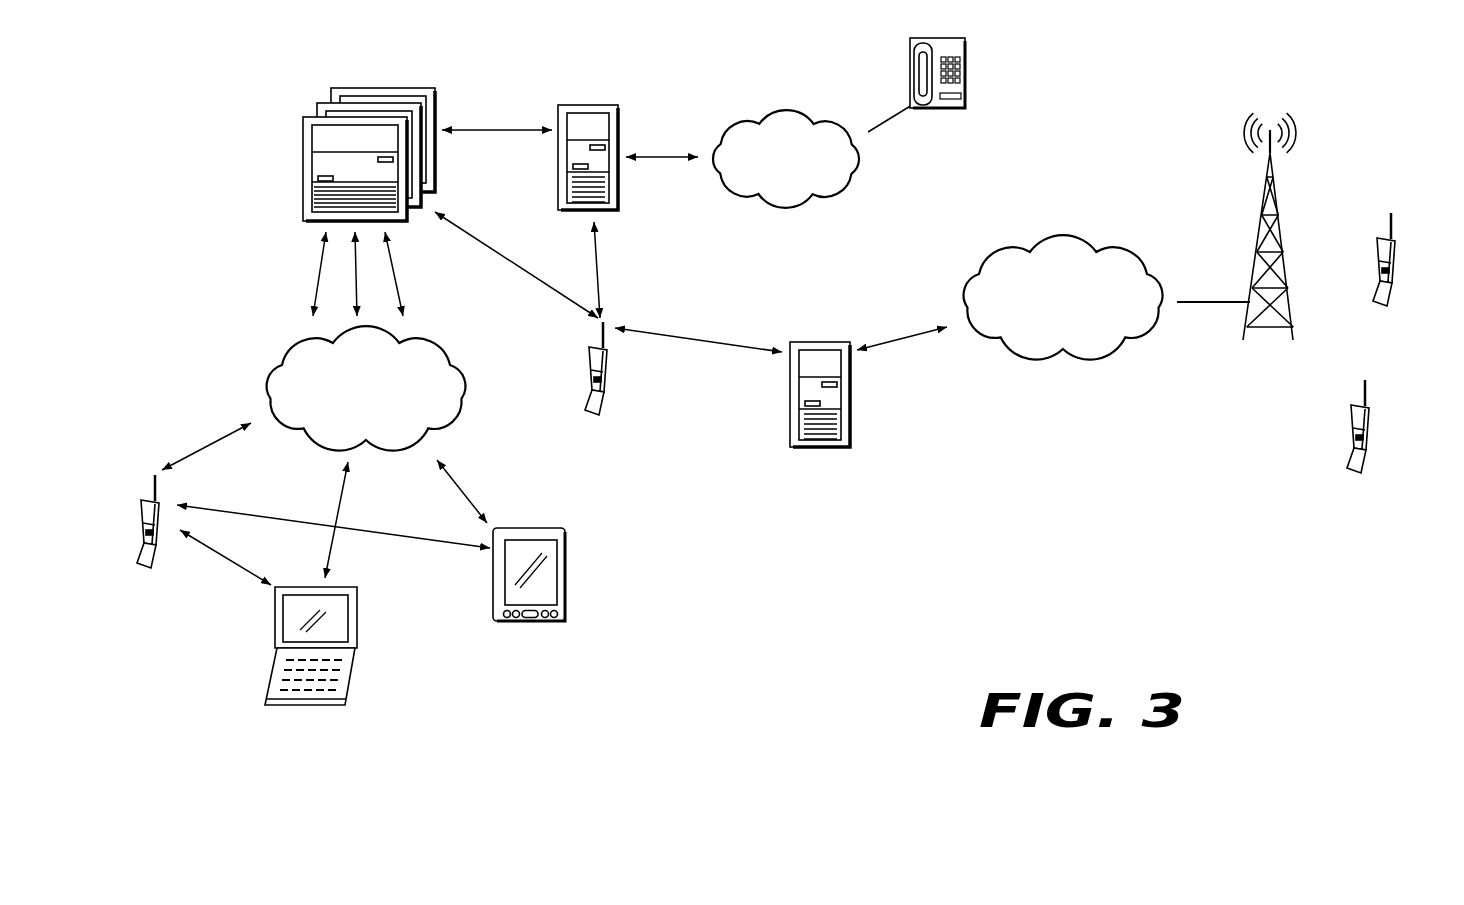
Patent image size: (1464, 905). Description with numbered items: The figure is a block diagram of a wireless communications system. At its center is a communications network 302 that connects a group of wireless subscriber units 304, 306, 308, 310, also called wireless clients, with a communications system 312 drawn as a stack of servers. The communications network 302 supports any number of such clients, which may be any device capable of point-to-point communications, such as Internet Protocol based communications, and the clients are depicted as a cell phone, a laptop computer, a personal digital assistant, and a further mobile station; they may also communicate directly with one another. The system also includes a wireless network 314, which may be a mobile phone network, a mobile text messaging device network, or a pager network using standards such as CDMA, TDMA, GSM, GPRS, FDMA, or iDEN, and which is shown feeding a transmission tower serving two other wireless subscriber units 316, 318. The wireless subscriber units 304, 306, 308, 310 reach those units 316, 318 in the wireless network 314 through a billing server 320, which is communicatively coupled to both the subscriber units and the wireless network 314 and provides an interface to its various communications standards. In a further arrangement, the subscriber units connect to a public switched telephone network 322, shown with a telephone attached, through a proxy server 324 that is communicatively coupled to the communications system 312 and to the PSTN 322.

The communications network 302 is at (258, 364).
The wireless subscriber unit 304 is at (150, 519).
The wireless subscriber unit 306 is at (359, 617).
The wireless subscriber unit 308 is at (572, 566).
The wireless subscriber unit 310 is at (610, 367).
The communications system 312 is at (410, 72).
The wireless network 314 is at (1059, 233).
The wireless subscriber unit 316 is at (1397, 256).
The wireless subscriber unit 318 is at (1371, 422).
The billing server 320 is at (822, 450).
The public switched telephone network 322 is at (782, 108).
The proxy server 324 is at (588, 104).